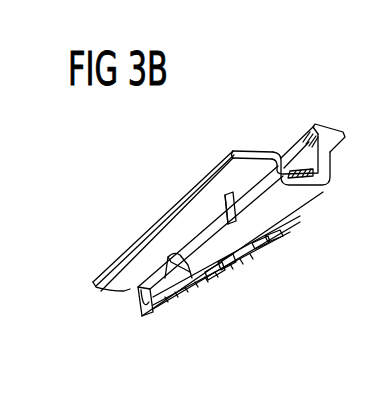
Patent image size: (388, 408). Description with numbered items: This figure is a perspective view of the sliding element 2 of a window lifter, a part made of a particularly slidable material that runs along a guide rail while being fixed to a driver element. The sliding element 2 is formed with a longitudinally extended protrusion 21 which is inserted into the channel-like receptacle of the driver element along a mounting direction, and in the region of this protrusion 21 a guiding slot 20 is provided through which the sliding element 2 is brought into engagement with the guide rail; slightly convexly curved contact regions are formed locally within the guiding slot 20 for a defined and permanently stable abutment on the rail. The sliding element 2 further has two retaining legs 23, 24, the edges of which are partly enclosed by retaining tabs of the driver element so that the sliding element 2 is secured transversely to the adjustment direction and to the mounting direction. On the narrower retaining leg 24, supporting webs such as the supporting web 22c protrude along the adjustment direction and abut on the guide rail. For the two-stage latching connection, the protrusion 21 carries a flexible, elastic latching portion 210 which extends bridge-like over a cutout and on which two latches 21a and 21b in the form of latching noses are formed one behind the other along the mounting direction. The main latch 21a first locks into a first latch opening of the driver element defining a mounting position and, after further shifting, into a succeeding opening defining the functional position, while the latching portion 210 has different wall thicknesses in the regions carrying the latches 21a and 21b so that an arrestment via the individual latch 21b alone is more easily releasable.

The sliding element 2 is at (118, 238).
The guiding slot 20 is at (330, 177).
The protrusion 21 is at (145, 307).
The latch 21a is at (265, 246).
The latch 21b is at (228, 263).
The supporting web 22c is at (309, 132).
The retaining leg 23 is at (172, 212).
The retaining leg 24 is at (337, 131).
The latching portion 210 is at (226, 250).